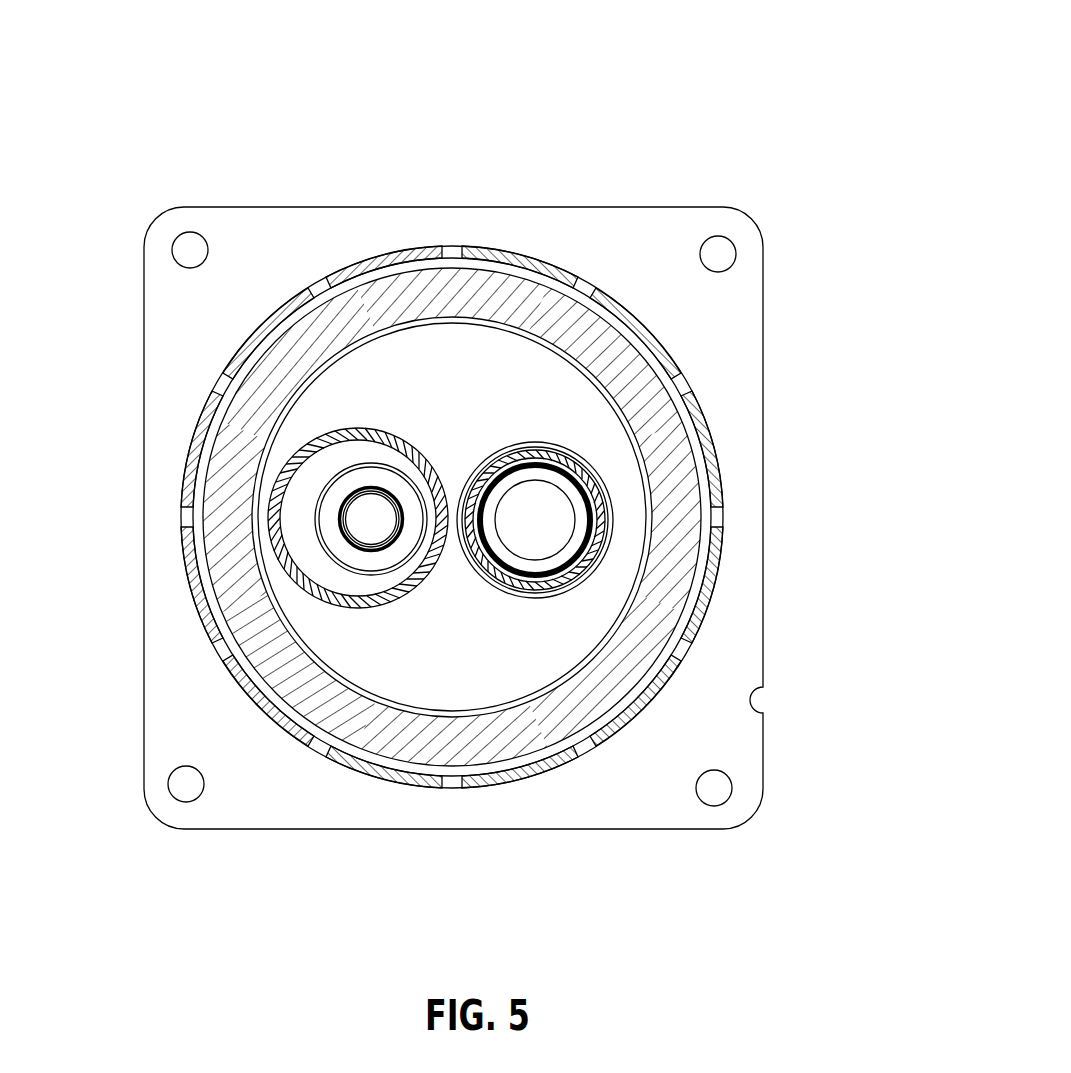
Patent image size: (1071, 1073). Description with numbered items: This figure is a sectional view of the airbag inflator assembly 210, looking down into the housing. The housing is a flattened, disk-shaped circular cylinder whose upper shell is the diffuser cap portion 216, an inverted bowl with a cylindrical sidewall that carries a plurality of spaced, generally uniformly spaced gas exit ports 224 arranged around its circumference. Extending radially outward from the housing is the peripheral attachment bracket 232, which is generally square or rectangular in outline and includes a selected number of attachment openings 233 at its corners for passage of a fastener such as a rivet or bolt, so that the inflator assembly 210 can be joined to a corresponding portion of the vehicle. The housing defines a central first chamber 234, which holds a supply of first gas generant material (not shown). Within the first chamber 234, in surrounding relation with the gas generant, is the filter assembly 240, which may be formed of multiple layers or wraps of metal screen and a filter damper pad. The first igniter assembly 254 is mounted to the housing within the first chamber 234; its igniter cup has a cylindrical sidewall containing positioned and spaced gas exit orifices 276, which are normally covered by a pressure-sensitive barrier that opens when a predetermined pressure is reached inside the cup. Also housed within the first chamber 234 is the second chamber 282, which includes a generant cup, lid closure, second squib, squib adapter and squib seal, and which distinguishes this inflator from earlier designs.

The inflator assembly 210 is at (614, 140).
The diffuser cap portion 216 is at (544, 778).
The gas exit ports 224 is at (588, 280).
The peripheral bracket 232 is at (763, 620).
The attachment openings 233 is at (198, 232).
The central first chamber 234 is at (377, 652).
The filter assembly 240 is at (315, 334).
The first igniter assembly 254 is at (608, 498).
The gas exit orifices 276 is at (583, 453).
The second chamber 282 is at (292, 582).